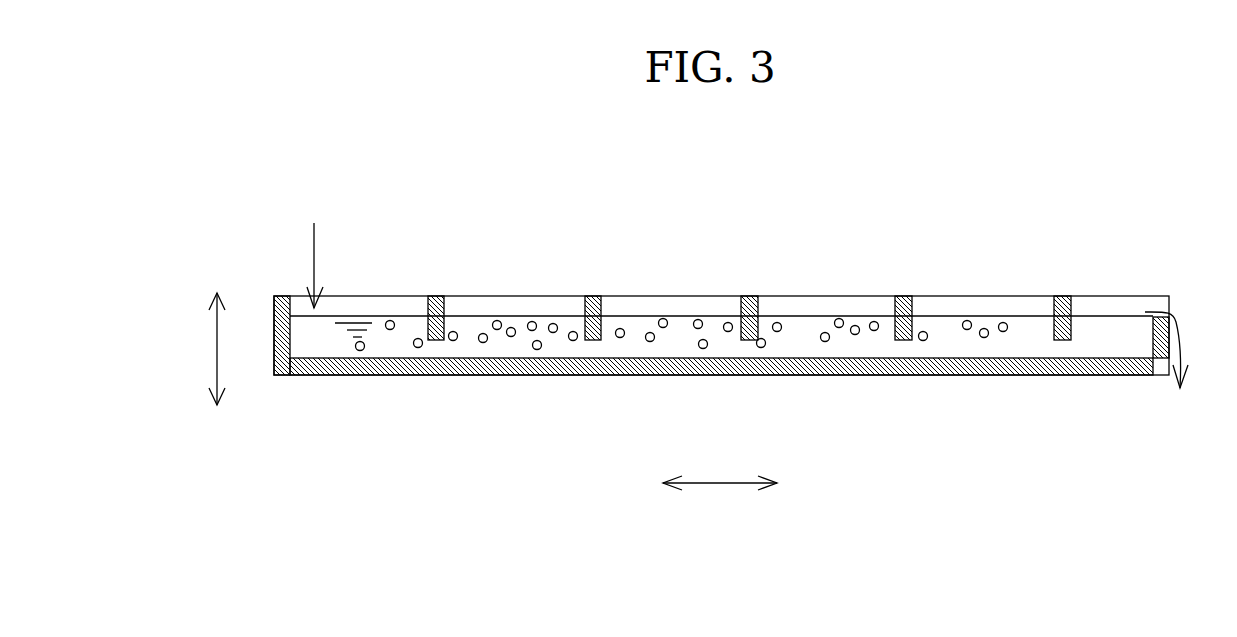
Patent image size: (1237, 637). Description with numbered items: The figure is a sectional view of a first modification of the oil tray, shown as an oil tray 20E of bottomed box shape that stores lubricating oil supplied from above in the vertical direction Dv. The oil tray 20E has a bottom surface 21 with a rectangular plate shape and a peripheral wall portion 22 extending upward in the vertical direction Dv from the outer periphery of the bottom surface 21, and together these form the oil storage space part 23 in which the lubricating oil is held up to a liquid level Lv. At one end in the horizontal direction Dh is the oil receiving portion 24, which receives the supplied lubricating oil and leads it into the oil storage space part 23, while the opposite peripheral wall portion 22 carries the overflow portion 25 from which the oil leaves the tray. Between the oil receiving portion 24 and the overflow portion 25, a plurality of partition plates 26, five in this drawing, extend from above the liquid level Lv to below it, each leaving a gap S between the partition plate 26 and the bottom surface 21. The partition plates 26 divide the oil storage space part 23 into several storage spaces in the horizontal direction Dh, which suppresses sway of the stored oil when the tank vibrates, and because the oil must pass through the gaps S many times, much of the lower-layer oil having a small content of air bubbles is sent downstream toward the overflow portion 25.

The oil tray 20E is at (683, 295).
The bottom surface 21 is at (632, 375).
The peripheral wall portion 22 is at (272, 308).
The oil storage space part 23 is at (805, 330).
The oil receiving portion 24 is at (317, 332).
The overflow portion 25 is at (1160, 295).
The partition plate 26 is at (437, 293).
The liquid level Lv is at (978, 317).
The gap S is at (1063, 348).
The vertical direction Dv is at (199, 349).
The horizontal direction Dh is at (720, 467).